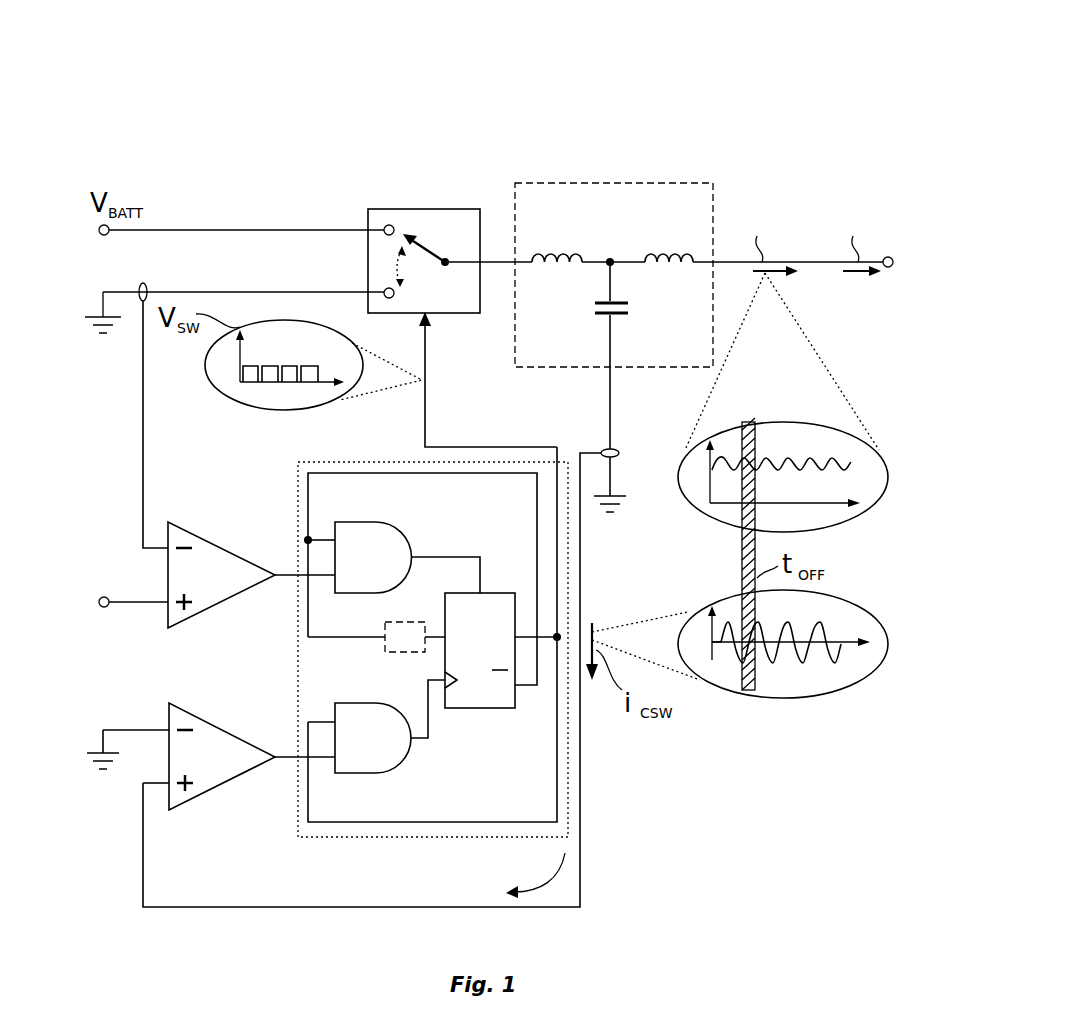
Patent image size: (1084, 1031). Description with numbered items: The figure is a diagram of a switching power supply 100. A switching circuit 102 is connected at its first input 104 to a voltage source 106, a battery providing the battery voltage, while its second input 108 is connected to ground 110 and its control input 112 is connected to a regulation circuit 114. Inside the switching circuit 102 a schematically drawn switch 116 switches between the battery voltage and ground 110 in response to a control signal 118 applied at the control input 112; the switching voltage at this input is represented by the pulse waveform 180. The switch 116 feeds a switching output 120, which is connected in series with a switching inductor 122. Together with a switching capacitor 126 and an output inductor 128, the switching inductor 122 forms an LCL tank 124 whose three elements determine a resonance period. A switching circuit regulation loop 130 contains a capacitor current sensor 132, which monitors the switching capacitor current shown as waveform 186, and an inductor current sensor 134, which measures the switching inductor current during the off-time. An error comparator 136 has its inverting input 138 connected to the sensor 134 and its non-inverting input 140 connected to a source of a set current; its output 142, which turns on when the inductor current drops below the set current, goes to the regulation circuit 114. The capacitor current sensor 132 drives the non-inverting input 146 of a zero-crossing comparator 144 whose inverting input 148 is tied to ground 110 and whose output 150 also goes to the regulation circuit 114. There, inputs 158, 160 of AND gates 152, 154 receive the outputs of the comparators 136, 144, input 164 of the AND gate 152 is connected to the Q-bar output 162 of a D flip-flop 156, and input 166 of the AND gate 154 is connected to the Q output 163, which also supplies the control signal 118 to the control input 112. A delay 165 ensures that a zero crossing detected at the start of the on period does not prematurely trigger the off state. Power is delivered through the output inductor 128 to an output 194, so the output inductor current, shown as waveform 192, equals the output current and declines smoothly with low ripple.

The switching power supply 100 is at (547, 64).
The switching circuit 102 is at (430, 208).
The first input 104 is at (358, 226).
The voltage source 106 is at (108, 236).
The second input 108 is at (357, 290).
The ground 110 is at (103, 337).
The control input 112 is at (428, 352).
The regulation circuit 114 is at (297, 474).
The switch 116 is at (428, 262).
The control signal 118 is at (320, 410).
The switching output 120 is at (495, 262).
The switching inductor 122 is at (558, 250).
The LCL tank 124 is at (670, 182).
The switching capacitor 126 is at (598, 318).
The output inductor 128 is at (661, 250).
The switching circuit regulation loop 130 is at (548, 882).
The capacitor current sensor 132 is at (604, 452).
The inductor current sensor 134 is at (148, 288).
The error comparator 136 is at (221, 575).
The inverting input 138 is at (152, 546).
The non-inverting input 140 is at (138, 606).
The output 142 is at (280, 572).
The comparator 144 is at (222, 756).
The non-inverting input 146 is at (156, 786).
The inverting input 148 is at (152, 728).
The output 150 is at (283, 755).
The AND gate 152 is at (407, 557).
The AND gate 154 is at (390, 726).
The D flip-flop 156 is at (465, 710).
The input 158 is at (323, 578).
The input 160 is at (328, 765).
The Q-bar output 162 is at (536, 688).
The Q output 163 is at (537, 543).
The input 164 is at (322, 537).
The delay 165 is at (402, 652).
The input 166 is at (327, 718).
The waveform 180 is at (272, 364).
The waveform 186 is at (775, 658).
The waveform 192 is at (786, 466).
The output 194 is at (888, 268).